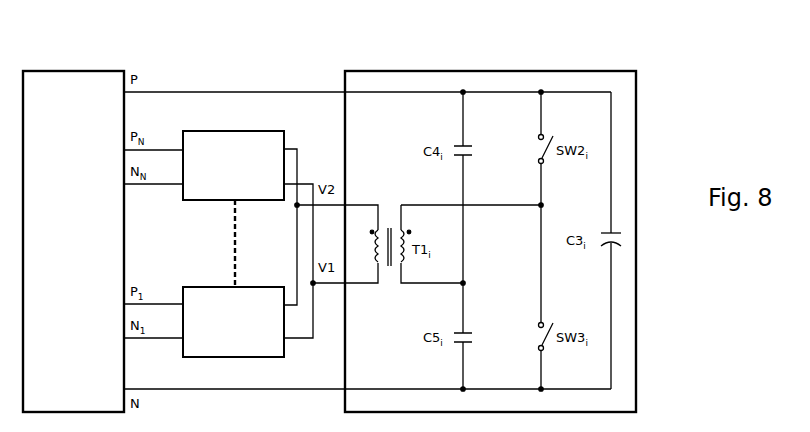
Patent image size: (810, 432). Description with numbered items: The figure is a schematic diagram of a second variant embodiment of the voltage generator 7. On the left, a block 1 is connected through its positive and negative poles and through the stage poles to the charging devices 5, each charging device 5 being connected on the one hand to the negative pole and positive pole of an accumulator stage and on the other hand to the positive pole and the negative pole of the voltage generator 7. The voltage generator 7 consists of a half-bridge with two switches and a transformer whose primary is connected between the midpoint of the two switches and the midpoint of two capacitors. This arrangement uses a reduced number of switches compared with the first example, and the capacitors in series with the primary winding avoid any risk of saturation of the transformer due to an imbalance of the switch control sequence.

The power supply unit 1 is at (76, 71).
The charging device 5 is at (218, 131).
The voltage generator 7 is at (372, 71).